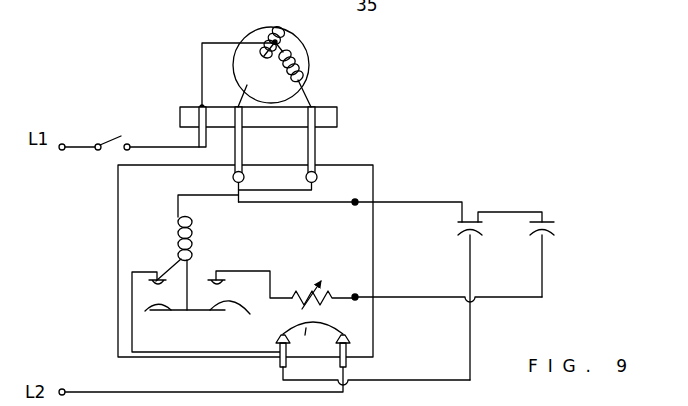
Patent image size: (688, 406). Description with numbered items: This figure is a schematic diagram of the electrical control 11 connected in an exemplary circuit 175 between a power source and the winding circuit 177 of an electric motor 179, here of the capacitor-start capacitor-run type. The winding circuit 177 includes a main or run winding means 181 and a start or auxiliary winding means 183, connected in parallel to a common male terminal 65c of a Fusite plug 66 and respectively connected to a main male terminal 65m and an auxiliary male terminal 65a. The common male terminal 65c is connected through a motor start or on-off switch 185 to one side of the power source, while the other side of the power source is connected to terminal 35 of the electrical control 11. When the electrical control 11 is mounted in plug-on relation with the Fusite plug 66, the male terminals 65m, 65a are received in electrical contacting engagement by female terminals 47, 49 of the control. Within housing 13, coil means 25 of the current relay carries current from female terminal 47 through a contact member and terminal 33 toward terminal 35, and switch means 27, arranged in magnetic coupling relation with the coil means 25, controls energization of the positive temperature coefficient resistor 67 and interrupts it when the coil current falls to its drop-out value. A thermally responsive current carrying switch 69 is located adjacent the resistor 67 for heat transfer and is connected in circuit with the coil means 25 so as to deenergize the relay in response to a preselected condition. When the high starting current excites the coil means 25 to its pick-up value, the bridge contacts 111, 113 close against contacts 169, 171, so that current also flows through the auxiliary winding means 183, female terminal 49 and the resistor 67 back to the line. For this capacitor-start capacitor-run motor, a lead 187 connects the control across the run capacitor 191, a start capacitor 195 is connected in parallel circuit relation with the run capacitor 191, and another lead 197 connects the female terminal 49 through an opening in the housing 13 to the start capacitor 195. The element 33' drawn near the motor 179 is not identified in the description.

The electrical control 11 is at (394, 160).
The housing 13 is at (374, 258).
The coil means 25 is at (177, 232).
The switch means 27 is at (198, 311).
The terminal 33 is at (355, 360).
The motor 33' is at (283, 9).
The terminal 35 is at (347, 368).
The female terminal 47 is at (306, 180).
The female terminal 49 is at (233, 180).
The auxiliary male terminal 65a is at (245, 140).
The common male terminal 65c is at (196, 138).
The main male terminal 65m is at (316, 142).
The Fusite plug 66 is at (184, 104).
The positive temperature coefficient resistor 67 is at (300, 291).
The thermally responsive current carrying switch 69 is at (313, 339).
The contact 111 is at (158, 324).
The contact 113 is at (238, 319).
The contact 169 is at (150, 293).
The contact 171 is at (212, 276).
The circuit 175 is at (407, 79).
The winding circuit 177 is at (263, 55).
The electric motor 179 is at (299, 38).
The main winding means 181 is at (294, 60).
The auxiliary winding means 183 is at (248, 67).
The switch 185 is at (116, 139).
The lead 187 is at (431, 202).
The run capacitor 191 is at (456, 229).
The start capacitor 195 is at (552, 227).
The lead 197 is at (510, 299).